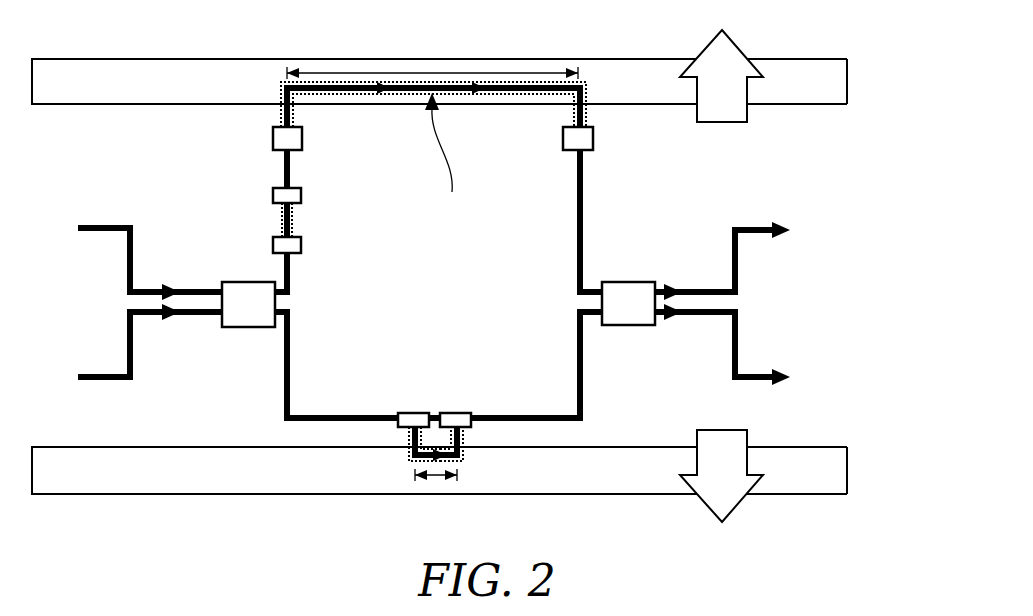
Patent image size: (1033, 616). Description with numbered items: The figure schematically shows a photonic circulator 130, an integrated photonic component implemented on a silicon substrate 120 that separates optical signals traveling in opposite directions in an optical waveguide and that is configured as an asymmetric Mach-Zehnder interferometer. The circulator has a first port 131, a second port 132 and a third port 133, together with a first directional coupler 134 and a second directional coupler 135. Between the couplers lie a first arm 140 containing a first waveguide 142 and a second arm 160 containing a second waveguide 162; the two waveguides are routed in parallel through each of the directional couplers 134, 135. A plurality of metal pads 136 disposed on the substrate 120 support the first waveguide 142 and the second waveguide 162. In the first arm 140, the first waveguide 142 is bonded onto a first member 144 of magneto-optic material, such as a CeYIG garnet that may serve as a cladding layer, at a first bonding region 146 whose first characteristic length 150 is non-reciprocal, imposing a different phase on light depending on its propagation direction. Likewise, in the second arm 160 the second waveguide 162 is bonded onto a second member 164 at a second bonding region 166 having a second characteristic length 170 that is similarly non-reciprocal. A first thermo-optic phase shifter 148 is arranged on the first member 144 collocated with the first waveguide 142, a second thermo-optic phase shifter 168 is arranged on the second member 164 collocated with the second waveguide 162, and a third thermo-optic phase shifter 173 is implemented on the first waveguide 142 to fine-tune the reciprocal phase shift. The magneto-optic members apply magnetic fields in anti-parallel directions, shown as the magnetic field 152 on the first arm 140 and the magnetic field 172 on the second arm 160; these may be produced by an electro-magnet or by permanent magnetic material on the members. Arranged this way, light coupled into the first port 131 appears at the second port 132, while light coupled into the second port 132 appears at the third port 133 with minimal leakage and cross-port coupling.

The silicon substrate 120 is at (781, 189).
The photonic circulator 130 is at (845, 205).
The first port 131 is at (200, 290).
The second port 132 is at (713, 290).
The third port 133 is at (200, 315).
The first directional coupler 134 is at (266, 315).
The second directional coupler 135 is at (646, 315).
The metal pads 136 is at (302, 247).
The first arm 140 is at (856, 58).
The first waveguide 142 is at (285, 268).
The first member 144 is at (849, 68).
The first bonding region 146 is at (310, 82).
The first thermo-optic phase shifter 148 is at (448, 158).
The first characteristic length 150 is at (438, 72).
The magnetic field 152 is at (705, 111).
The second arm 160 is at (856, 462).
The second waveguide 162 is at (287, 390).
The second member 164 is at (849, 475).
The second bonding region 166 is at (415, 450).
The second thermo-optic phase shifter 168 is at (457, 450).
The second characteristic length 170 is at (437, 481).
The magnetic field 172 is at (705, 461).
The third thermo-optic phase shifter 173 is at (282, 220).